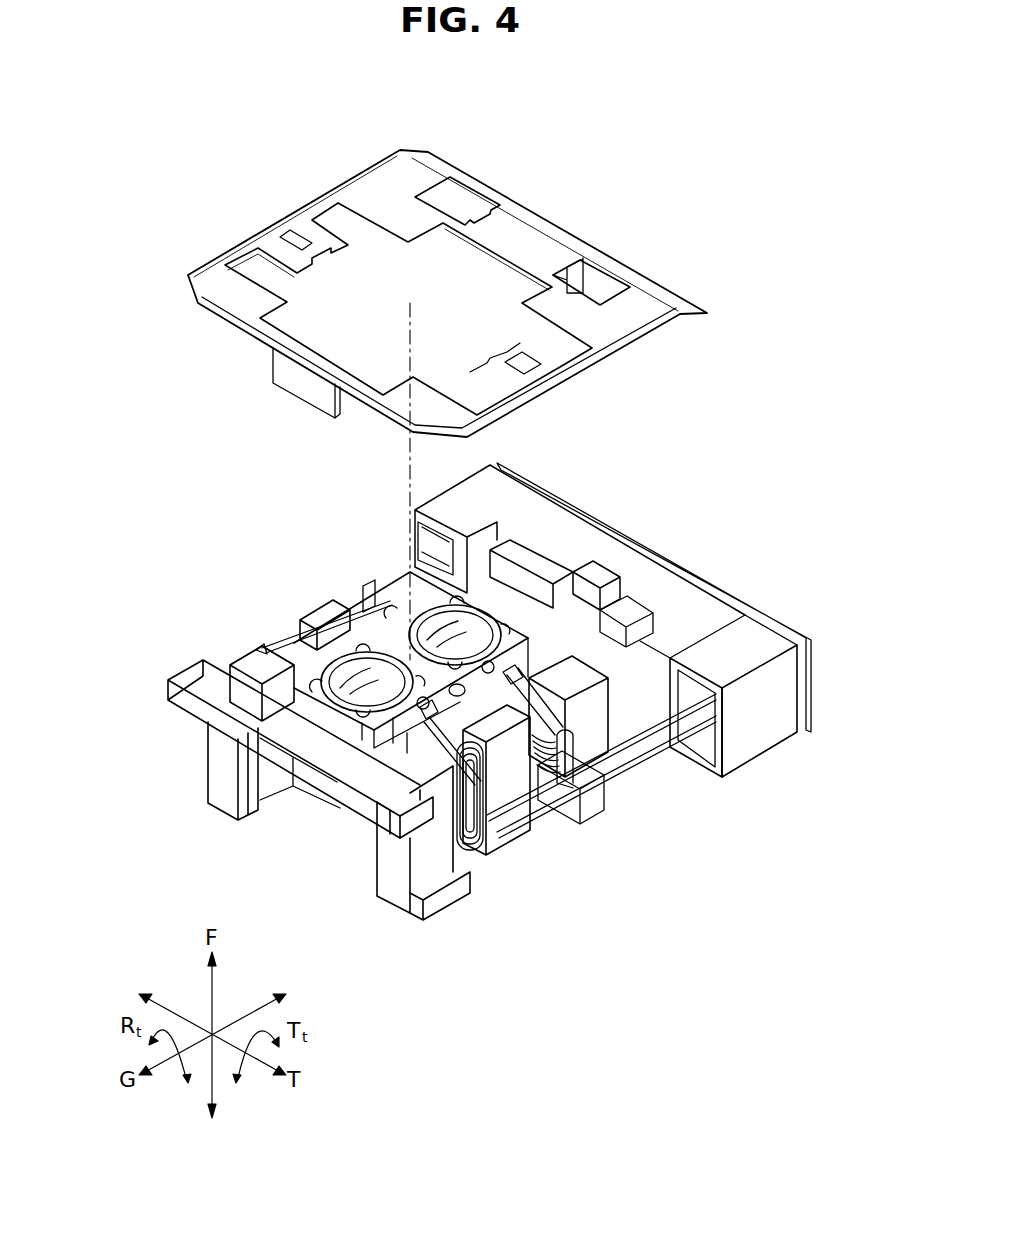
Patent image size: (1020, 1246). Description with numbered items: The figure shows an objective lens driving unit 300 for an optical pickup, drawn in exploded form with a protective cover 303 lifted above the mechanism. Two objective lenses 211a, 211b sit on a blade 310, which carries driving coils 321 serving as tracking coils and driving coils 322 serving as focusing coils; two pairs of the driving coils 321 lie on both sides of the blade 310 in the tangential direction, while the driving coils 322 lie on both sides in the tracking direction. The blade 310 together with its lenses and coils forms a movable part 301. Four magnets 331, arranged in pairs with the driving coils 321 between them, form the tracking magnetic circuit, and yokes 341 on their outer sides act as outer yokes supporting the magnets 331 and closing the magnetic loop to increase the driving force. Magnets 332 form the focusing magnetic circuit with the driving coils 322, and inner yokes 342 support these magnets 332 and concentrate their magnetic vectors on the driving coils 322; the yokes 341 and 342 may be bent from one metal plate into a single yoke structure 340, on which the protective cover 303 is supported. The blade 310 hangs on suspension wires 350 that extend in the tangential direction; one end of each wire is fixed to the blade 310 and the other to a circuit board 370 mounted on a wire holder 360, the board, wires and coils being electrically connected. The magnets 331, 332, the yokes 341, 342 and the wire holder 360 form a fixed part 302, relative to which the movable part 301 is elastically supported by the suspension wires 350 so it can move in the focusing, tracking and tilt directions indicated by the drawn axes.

The objective lens driving unit 300 is at (742, 237).
The protective cover 303 is at (201, 273).
The blade 310 is at (382, 622).
The objective lens 211a is at (467, 628).
The objective lens 211b is at (306, 658).
The movable part 301 is at (257, 663).
The fixed part 302 is at (218, 832).
The driving coils 321 is at (493, 850).
The driving coils 322 is at (573, 795).
The magnets 331 is at (400, 578).
The magnets 332 is at (317, 623).
The yoke structure 340 is at (378, 918).
The yokes 341 is at (402, 903).
The yokes 342 is at (297, 627).
The suspension wires 350 is at (348, 617).
The wire holder 360 is at (748, 750).
The circuit board 370 is at (812, 691).